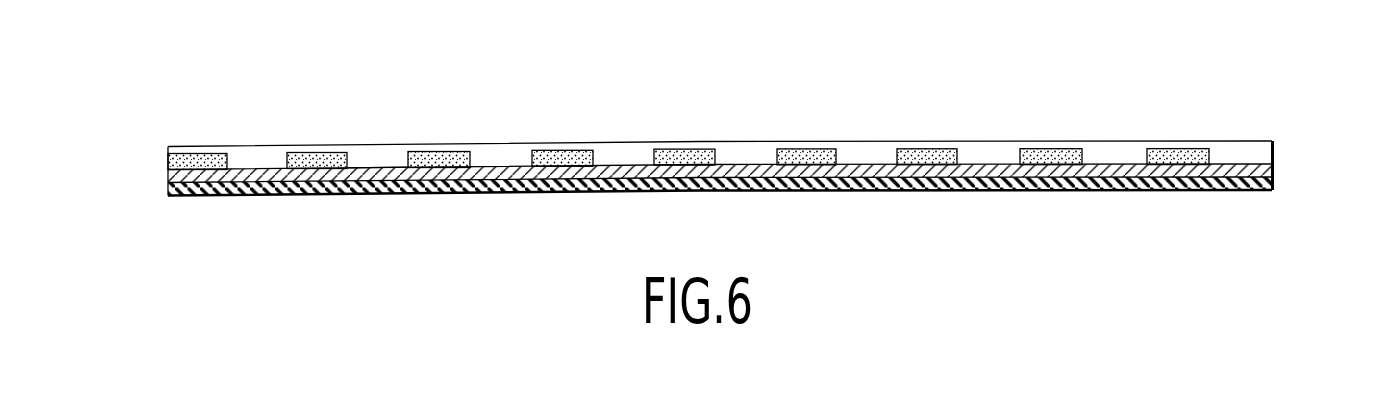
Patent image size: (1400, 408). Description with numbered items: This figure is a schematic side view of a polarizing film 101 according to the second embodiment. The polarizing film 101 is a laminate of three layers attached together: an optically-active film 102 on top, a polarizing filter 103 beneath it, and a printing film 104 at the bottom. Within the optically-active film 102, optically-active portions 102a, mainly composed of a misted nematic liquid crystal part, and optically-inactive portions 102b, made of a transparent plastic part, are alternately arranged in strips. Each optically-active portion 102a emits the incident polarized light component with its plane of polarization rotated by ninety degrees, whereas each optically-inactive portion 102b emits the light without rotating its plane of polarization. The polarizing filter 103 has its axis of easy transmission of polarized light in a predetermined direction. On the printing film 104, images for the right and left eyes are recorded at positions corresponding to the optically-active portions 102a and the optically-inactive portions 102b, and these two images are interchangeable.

The polarizing film 101 is at (762, 164).
The optically-active film 102 is at (668, 100).
The optically-active portion 102a is at (207, 155).
The optically-inactive portion 102b is at (376, 157).
The polarizing filter 103 is at (1271, 172).
The printing film 104 is at (1246, 188).